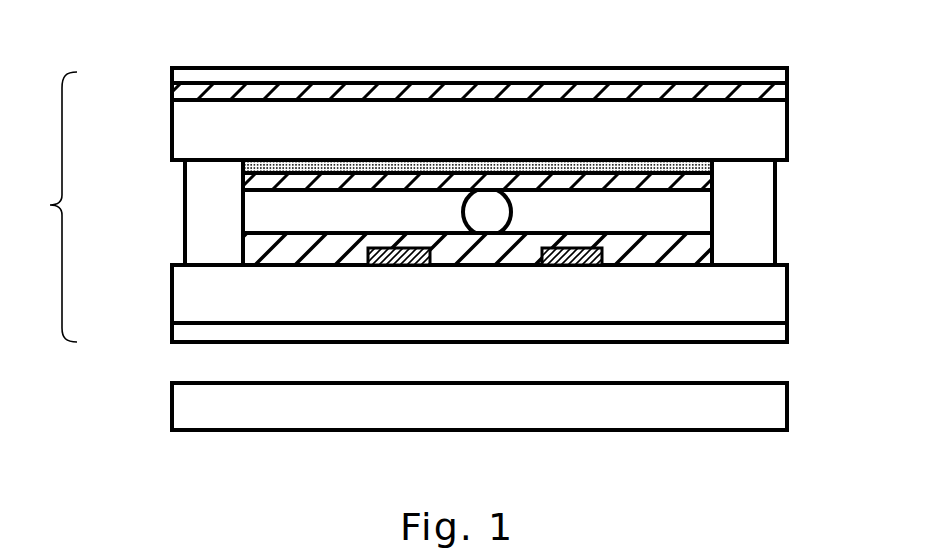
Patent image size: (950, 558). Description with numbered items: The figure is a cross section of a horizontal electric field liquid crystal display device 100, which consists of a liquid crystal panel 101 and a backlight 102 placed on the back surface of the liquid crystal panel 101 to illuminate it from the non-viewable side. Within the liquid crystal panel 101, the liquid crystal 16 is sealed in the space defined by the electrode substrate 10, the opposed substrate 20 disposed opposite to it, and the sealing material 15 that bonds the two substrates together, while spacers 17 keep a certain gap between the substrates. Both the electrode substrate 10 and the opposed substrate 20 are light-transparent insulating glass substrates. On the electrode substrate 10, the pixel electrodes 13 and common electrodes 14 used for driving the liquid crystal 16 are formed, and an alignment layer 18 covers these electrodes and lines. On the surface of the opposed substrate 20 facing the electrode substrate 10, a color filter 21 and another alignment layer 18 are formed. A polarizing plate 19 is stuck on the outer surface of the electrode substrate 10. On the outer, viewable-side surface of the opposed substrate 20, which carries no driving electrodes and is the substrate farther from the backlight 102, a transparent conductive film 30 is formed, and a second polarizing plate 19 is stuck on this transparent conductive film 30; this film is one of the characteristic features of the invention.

The electrode substrate 10 is at (790, 295).
The pixel electrode 13 is at (390, 265).
The common electrode 14 is at (562, 265).
The sealing material 15 is at (185, 190).
The liquid crystal 16 is at (707, 220).
The spacer 17 is at (490, 198).
The alignment layer 18 is at (253, 253).
The polarizing plate 19 is at (787, 72).
The opposed substrate 20 is at (787, 128).
The color filter 21 is at (597, 160).
The transparent conductive film 30 is at (172, 92).
The liquid crystal display device 100 is at (848, 505).
The liquid crystal panel 101 is at (40, 207).
The backlight 102 is at (790, 415).